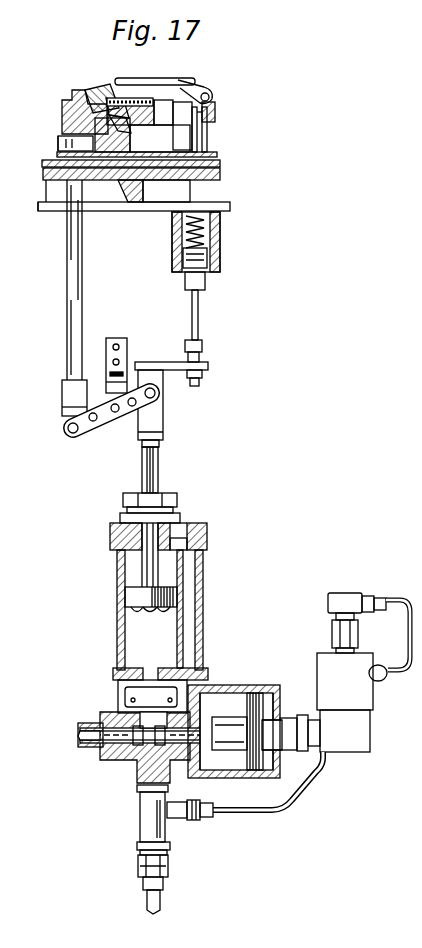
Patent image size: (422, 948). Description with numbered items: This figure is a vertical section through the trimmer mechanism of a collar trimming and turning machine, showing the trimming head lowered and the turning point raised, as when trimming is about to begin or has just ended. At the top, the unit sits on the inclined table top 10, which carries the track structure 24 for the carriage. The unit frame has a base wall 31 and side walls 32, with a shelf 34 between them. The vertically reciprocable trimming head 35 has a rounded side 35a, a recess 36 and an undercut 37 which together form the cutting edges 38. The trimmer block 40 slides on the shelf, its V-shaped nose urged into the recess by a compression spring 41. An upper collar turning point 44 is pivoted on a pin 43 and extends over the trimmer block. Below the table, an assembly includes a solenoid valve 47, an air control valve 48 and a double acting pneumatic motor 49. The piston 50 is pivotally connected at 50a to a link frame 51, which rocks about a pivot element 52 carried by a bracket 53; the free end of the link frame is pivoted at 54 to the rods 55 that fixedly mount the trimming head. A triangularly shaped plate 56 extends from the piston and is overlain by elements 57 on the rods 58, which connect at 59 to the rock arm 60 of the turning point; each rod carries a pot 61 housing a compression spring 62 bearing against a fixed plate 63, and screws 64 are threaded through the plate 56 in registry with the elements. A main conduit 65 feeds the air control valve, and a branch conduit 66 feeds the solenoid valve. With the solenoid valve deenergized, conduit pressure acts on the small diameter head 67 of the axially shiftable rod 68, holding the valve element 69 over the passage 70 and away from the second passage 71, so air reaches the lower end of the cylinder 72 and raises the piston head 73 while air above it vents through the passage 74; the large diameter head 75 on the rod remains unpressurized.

The table top 10 is at (221, 164).
The track structure 24 is at (44, 206).
The base wall 31 is at (57, 143).
The side walls 32 is at (207, 141).
The shelf 34 is at (195, 81).
The trimming head 35 is at (64, 110).
The rounded side 35a is at (103, 89).
The recess 36 is at (143, 127).
The undercut 37 is at (118, 186).
The cutting edges 38 is at (82, 140).
The trimmer block 40 is at (138, 100).
The compression spring 41 is at (162, 100).
The pin 43 is at (209, 94).
The upper collar turning point 44 is at (125, 78).
The solenoid valve 47 is at (345, 672).
The air control valve 48 is at (238, 685).
The double acting pneumatic motor 49 is at (200, 523).
The piston 50 is at (159, 465).
The pivotal connection 50a is at (163, 397).
The link frame 51 is at (88, 438).
The pivot element 52 is at (131, 406).
The bracket 53 is at (106, 350).
The pivot 54 is at (66, 432).
The rods 55 is at (67, 274).
The triangularly shaped plate 56 is at (172, 362).
The elements 57 is at (203, 344).
The rods 58 is at (199, 306).
The pivotal connection 59 is at (208, 121).
The rock arm 60 is at (216, 108).
The pot 61 is at (219, 237).
The compression spring 62 is at (216, 222).
The plate 63 is at (215, 204).
The screws 64 is at (203, 356).
The main conduit 65 is at (146, 899).
The branch conduit 66 is at (315, 776).
The small diameter head 67 is at (225, 718).
The rod 68 is at (95, 755).
The valve element 69 is at (98, 723).
The passage 70 is at (161, 687).
The second passage 71 is at (118, 690).
The pneumatic motor cylinder 72 is at (118, 625).
The piston head 73 is at (125, 595).
The passage 74 is at (197, 618).
The large diameter head 75 is at (257, 700).